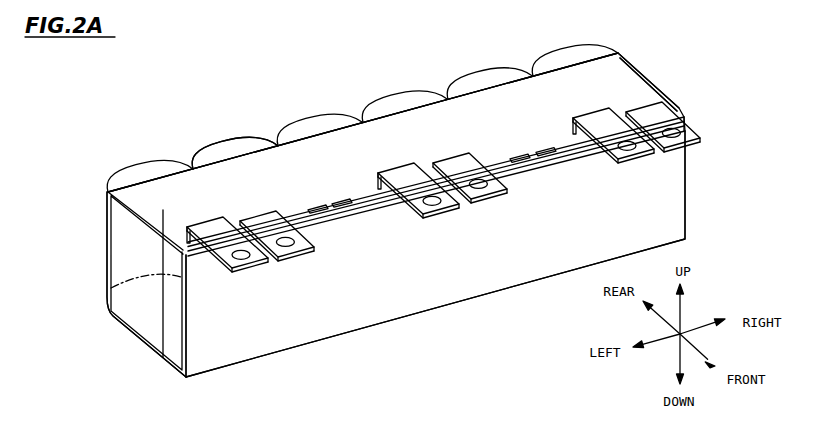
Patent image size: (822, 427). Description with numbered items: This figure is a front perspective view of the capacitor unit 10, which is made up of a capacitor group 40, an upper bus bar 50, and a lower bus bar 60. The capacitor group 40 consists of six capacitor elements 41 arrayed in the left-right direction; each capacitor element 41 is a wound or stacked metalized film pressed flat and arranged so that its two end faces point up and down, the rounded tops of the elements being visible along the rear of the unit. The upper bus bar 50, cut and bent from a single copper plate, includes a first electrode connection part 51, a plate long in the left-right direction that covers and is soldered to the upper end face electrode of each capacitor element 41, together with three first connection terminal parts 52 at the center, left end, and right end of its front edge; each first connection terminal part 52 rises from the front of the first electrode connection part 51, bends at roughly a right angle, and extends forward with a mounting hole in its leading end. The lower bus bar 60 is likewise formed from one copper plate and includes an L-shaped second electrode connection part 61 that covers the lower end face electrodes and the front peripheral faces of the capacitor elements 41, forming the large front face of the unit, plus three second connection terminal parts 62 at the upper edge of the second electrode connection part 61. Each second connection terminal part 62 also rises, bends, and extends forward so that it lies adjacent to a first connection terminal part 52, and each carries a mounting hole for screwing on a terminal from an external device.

The capacitor unit 10 is at (242, 127).
The capacitor group 40 is at (103, 222).
The capacitor element 41 is at (147, 176).
The upper bus bar 50 is at (666, 85).
The first electrode connection part 51 is at (504, 107).
The first connection terminal part 52 is at (213, 228).
The lower bus bar 60 is at (691, 195).
The second electrode connection part 61 is at (253, 337).
The second connection terminal part 62 is at (267, 222).